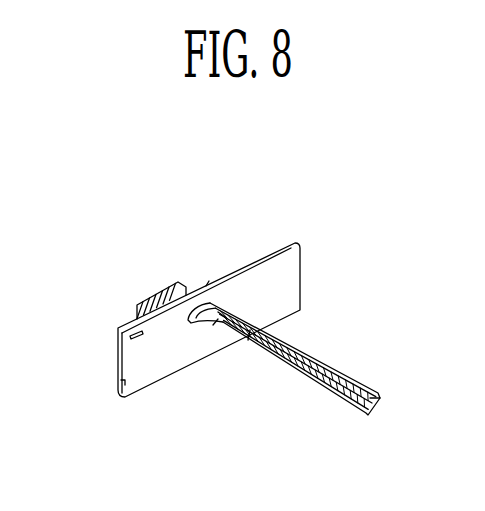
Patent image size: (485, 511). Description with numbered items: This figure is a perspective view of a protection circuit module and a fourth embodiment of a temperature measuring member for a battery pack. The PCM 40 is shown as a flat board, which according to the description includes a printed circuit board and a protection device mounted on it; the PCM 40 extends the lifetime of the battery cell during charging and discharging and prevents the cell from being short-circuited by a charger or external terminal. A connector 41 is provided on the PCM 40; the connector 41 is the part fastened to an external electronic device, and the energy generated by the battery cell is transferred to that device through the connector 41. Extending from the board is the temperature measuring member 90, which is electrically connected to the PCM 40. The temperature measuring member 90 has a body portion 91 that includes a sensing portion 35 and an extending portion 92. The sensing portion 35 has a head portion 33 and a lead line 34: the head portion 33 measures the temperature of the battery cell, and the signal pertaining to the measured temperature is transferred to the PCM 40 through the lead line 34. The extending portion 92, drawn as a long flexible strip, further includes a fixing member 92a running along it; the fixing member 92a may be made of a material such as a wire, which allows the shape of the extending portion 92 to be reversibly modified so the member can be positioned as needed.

The PCM 40 is at (237, 264).
The connector 41 is at (147, 296).
The temperature measuring member 90 is at (304, 296).
The body portion 91 is at (258, 306).
The extending portion 92 is at (355, 380).
The fixing member 92a is at (307, 349).
The head portion 33 is at (248, 340).
The lead line 34 is at (213, 325).
The sensing portion 35 is at (173, 418).